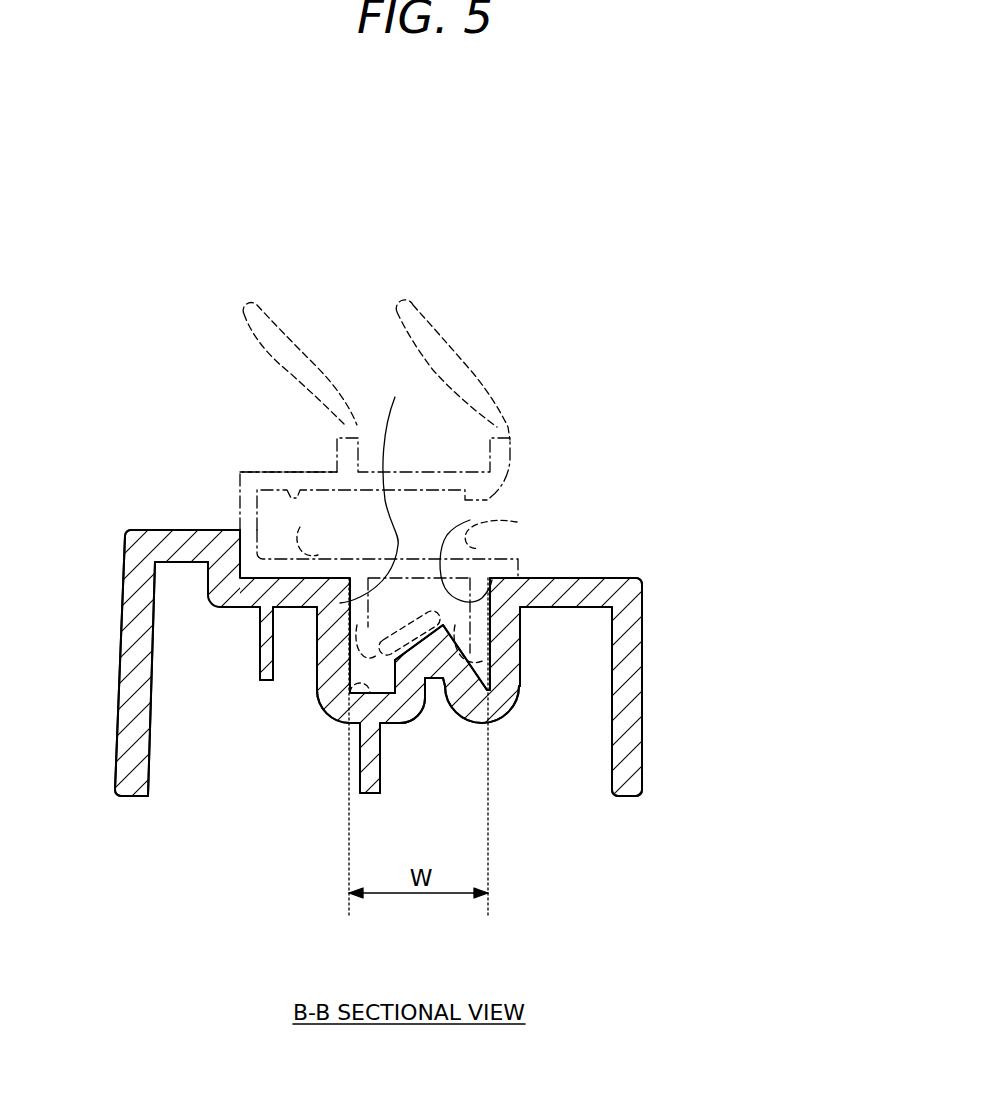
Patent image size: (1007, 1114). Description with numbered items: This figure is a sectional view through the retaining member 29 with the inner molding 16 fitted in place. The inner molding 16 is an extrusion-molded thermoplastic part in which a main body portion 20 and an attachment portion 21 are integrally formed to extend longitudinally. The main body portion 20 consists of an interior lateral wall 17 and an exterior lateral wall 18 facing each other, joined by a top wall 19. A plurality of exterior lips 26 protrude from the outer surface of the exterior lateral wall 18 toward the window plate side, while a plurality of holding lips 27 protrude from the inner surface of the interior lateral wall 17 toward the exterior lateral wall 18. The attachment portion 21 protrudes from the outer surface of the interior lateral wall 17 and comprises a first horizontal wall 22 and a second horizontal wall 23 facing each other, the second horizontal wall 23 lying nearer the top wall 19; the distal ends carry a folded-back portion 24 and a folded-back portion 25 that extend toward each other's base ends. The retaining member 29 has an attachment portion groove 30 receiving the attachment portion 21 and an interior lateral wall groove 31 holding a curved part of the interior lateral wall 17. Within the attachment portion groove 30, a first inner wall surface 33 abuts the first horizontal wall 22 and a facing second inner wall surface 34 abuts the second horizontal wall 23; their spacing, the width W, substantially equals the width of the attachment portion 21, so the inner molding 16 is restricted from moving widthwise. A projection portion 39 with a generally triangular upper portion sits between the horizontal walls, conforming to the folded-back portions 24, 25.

The inner molding 16 is at (240, 462).
The interior lateral wall 17 is at (297, 615).
The exterior lateral wall 18 is at (302, 475).
The top wall 19 is at (246, 532).
The main body portion 20 is at (237, 490).
The attachment portion 21 is at (508, 670).
The first horizontal wall 22 is at (520, 660).
The second horizontal wall 23 is at (320, 655).
The folded-back portion 24 is at (433, 668).
The folded-back portion 25 is at (420, 688).
The exterior lips 26 is at (280, 320).
The holding lips 27 is at (297, 527).
The retaining member 29 is at (648, 737).
The attachment portion groove 30 is at (332, 690).
The interior lateral wall groove 31 is at (253, 518).
The first inner wall surface 33 is at (470, 520).
The second inner wall surface 34 is at (375, 485).
The projection portion 39 is at (442, 620).